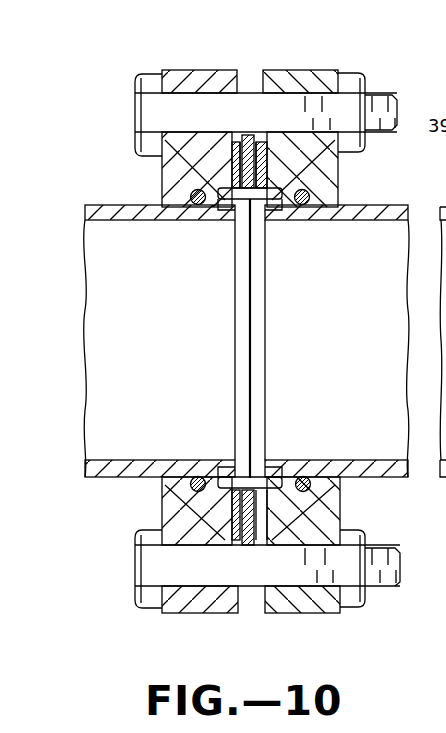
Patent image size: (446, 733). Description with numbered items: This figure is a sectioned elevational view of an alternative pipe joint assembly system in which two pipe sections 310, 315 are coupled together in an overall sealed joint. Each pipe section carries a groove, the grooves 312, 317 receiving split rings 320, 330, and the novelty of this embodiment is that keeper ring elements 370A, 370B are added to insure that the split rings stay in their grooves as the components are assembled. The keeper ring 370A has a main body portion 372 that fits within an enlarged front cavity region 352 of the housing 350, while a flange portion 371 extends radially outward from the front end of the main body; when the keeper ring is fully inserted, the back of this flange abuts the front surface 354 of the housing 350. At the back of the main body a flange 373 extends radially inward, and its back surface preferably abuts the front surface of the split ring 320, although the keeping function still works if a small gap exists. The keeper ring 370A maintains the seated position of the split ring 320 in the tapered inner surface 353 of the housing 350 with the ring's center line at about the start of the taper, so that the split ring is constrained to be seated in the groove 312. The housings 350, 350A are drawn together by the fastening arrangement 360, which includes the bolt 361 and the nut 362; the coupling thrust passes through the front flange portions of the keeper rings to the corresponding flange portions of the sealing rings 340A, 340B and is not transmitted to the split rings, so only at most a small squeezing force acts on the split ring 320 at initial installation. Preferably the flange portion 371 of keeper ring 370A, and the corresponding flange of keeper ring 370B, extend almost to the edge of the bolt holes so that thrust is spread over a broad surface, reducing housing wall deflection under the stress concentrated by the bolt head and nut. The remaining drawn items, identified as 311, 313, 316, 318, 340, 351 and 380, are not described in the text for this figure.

The pipe section 310 is at (352, 320).
The flange of second pipe section 311 is at (354, 206).
The groove 312 is at (278, 200).
The stem of connecting member 313 is at (252, 235).
The pipe section 315 is at (125, 322).
The flange of first pipe section 316 is at (105, 205).
The groove 317 is at (196, 208).
The pipe wall 318 is at (236, 232).
The split ring 320 is at (303, 476).
The split ring 330 is at (199, 476).
The central rod 340 is at (248, 140).
The sealing ring 340A is at (268, 180).
The sealing ring 340B is at (230, 172).
The housing 350 is at (342, 566).
The housing 350A is at (184, 614).
The clamp block inner portion 351 is at (320, 508).
The enlarged front cavity region 352 is at (262, 548).
The tapered inner surface 353 is at (303, 481).
The front surface 354 is at (248, 550).
The fastening arrangement 360 is at (240, 98).
The bolt 361 is at (145, 112).
The nut 362 is at (363, 80).
The keeper ring 370A is at (325, 152).
The keeper ring 370B is at (190, 150).
The flange portion 371 is at (256, 178).
The main body portion 372 is at (294, 174).
The flange 373 is at (300, 210).
The lower bolt 380 is at (289, 571).